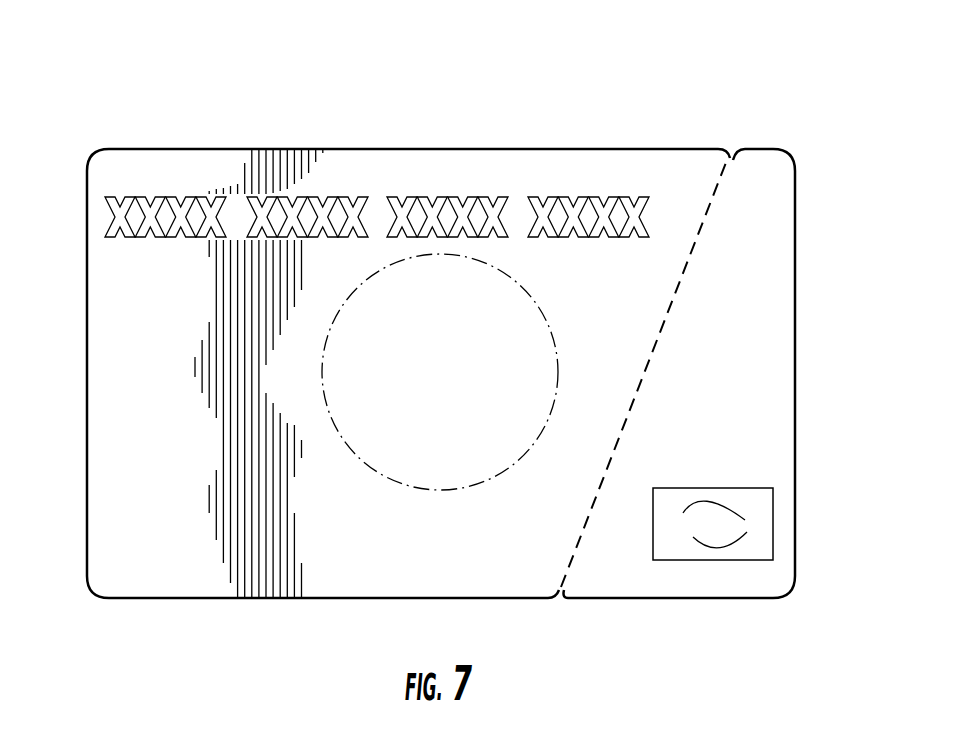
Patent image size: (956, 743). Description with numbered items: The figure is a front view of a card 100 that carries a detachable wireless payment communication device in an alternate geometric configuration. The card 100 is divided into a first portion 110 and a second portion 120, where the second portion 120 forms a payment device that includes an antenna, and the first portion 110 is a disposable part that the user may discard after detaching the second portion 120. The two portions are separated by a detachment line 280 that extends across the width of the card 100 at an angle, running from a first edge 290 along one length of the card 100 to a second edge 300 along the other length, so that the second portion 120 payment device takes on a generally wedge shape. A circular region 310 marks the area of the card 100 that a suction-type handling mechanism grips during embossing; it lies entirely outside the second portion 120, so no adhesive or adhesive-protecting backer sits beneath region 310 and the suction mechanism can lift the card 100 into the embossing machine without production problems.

The card 100 is at (492, 136).
The first portion 110 is at (117, 378).
The second portion 120 is at (785, 243).
The detachment line 280 is at (662, 327).
The first edge 290 is at (657, 603).
The second edge 300 is at (666, 147).
The region 310 is at (457, 388).